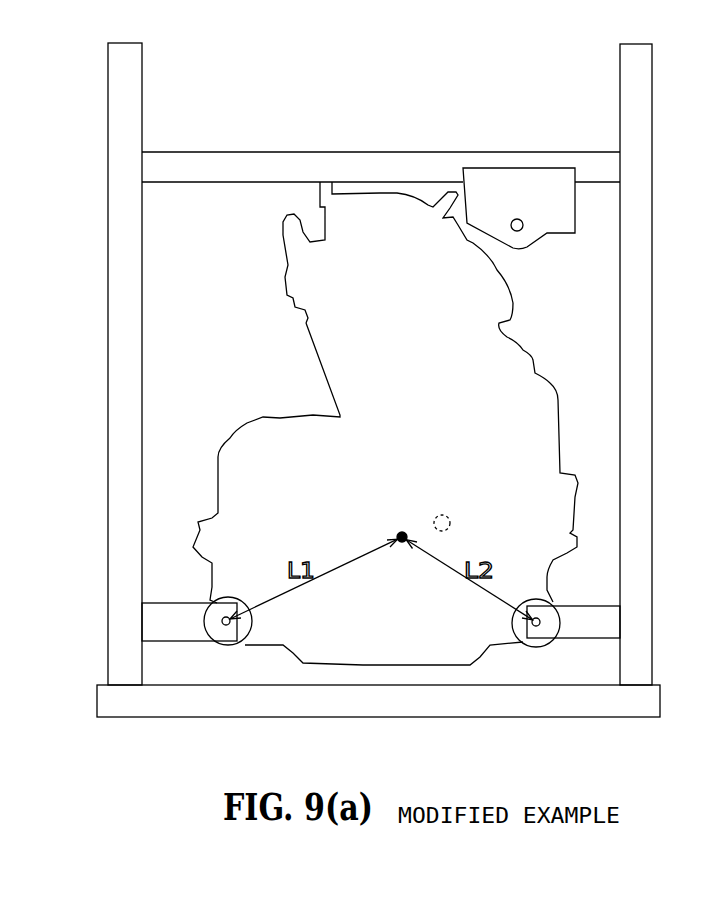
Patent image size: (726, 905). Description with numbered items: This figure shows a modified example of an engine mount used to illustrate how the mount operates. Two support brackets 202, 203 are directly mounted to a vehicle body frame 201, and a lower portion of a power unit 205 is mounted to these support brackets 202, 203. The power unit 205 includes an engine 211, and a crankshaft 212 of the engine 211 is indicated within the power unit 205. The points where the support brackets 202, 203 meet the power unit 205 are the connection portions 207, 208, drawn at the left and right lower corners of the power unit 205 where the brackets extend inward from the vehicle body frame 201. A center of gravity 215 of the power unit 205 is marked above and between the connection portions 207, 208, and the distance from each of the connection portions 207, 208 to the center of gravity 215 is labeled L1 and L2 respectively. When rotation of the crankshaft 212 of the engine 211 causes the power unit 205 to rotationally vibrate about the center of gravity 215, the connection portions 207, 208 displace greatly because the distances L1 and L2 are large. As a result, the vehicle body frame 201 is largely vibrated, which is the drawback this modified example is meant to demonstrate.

The vehicle body frame 201 is at (295, 152).
The support bracket 202 is at (175, 612).
The support bracket 203 is at (593, 608).
The power unit 205 is at (387, 233).
The connection portion 207 is at (215, 625).
The connection portion 208 is at (548, 625).
The engine 211 is at (362, 353).
The crankshaft 212 is at (447, 515).
The center of gravity 215 is at (400, 533).